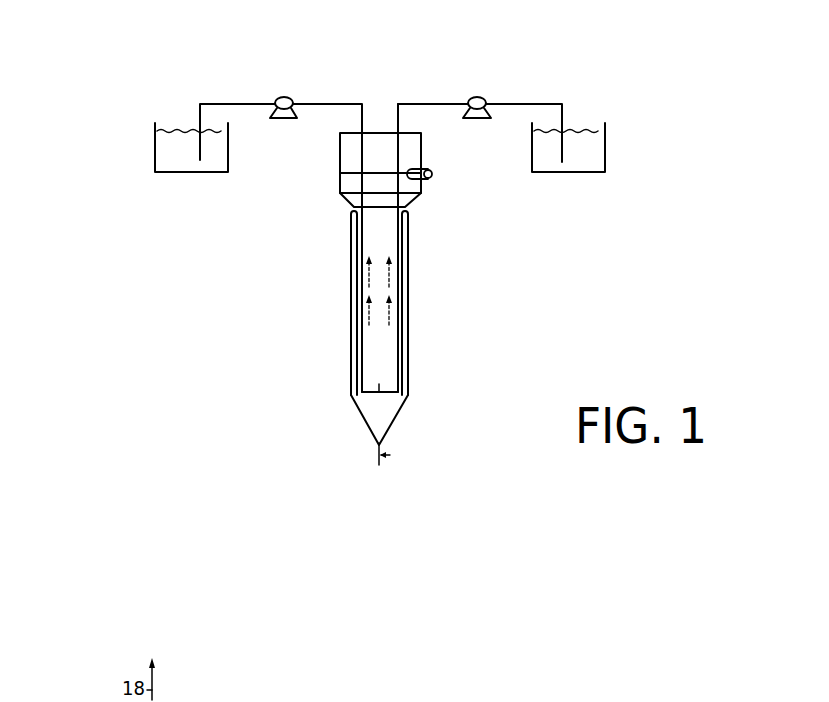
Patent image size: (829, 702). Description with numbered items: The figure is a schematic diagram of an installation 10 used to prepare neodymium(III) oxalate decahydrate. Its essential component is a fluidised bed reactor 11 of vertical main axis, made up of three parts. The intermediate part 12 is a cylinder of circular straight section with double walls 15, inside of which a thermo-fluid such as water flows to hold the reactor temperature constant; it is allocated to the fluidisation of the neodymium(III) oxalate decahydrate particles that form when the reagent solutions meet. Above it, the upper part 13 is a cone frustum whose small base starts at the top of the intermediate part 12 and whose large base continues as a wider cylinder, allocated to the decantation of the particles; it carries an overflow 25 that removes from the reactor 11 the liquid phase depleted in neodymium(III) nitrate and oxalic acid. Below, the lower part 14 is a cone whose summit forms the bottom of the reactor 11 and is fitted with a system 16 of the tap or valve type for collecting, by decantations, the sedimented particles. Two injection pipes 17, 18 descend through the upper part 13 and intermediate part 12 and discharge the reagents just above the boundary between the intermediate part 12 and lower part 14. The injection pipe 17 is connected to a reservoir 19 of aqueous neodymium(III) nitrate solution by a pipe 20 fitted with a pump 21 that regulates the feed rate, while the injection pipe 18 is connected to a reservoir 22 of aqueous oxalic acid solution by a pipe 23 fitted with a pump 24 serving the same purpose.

The installation 10 is at (607, 53).
The fluidised bed reactor 11 is at (433, 301).
The intermediate part 12 is at (351, 320).
The upper part 13 is at (340, 167).
The lower part 14 is at (363, 418).
The double walls 15 is at (403, 268).
The system of the tap, valve or analogous type 16 is at (390, 455).
The injection pipe 17 is at (360, 238).
The injection pipe 18 is at (405, 230).
The reservoir 19 is at (162, 155).
The pipe 20 is at (227, 103).
The pump 21 is at (283, 97).
The reservoir 22 is at (597, 153).
The pipe 23 is at (521, 104).
The pump 24 is at (476, 97).
The overflow 25 is at (433, 170).